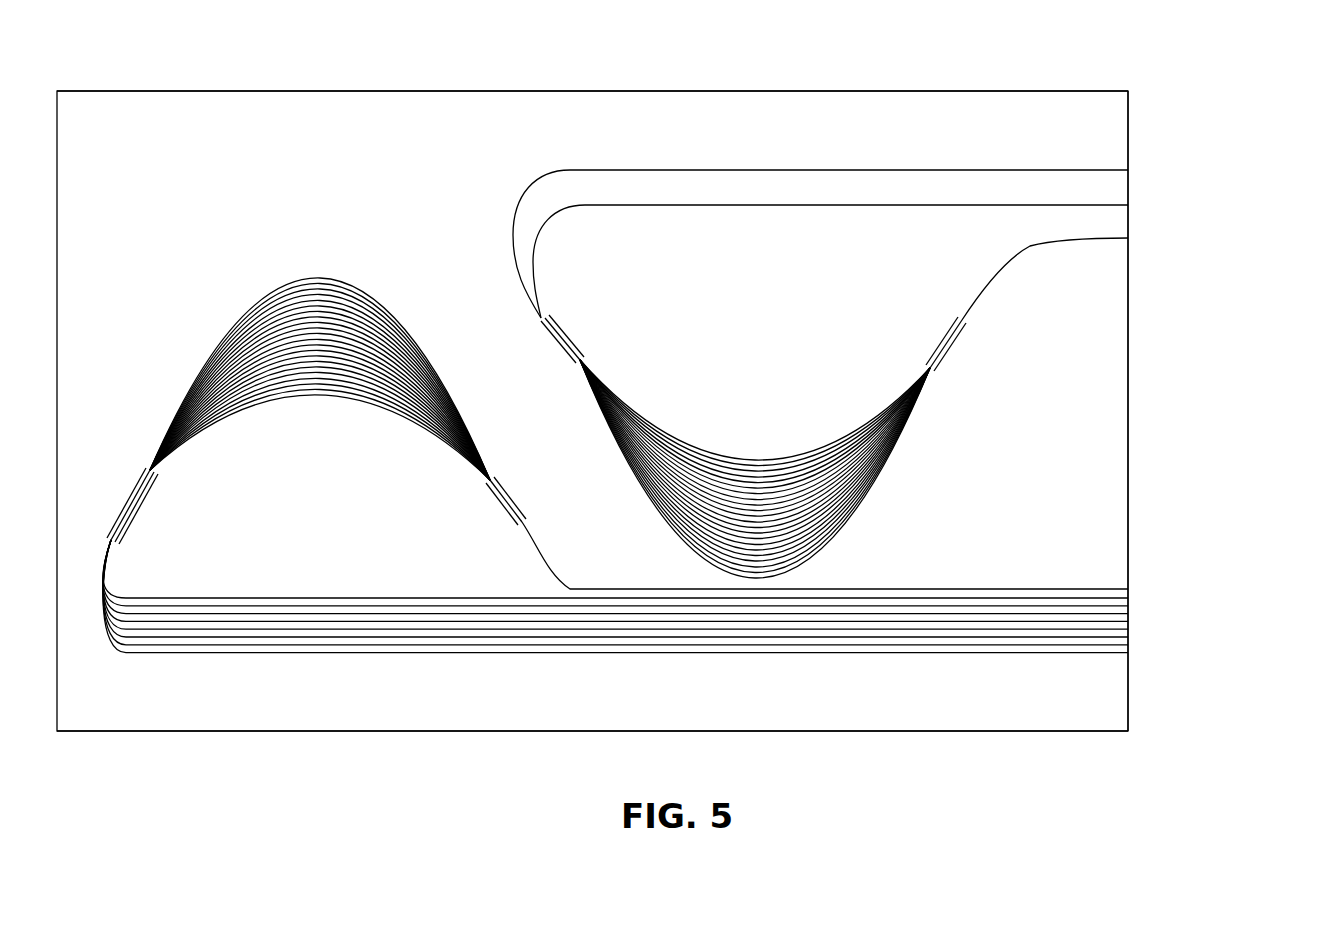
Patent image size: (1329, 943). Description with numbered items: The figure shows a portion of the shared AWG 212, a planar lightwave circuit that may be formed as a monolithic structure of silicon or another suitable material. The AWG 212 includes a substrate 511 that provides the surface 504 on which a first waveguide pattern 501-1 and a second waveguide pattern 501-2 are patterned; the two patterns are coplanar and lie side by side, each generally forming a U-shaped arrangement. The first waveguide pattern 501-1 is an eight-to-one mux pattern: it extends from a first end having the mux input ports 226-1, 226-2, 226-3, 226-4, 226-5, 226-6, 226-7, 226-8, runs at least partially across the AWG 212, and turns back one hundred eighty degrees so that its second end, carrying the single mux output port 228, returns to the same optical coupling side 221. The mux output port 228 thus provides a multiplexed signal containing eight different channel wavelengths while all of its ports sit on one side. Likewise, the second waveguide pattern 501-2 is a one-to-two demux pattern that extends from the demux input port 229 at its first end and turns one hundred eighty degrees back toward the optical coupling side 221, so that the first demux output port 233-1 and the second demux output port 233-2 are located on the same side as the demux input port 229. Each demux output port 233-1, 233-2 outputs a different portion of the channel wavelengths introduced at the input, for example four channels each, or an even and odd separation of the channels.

The surface 504 is at (310, 120).
The shared AWG 212 is at (530, 91).
The optical coupling side 221 is at (1128, 92).
The substrate 511 is at (187, 728).
The first waveguide pattern 501-1 is at (372, 276).
The second waveguide pattern 501-2 is at (713, 446).
The first demux output port 233-1 is at (1128, 170).
The second demux output port 233-2 is at (1128, 205).
The demux input port 229 is at (1128, 238).
The mux output port 228 is at (1128, 589).
The mux input port 226-1 is at (1138, 597).
The mux input port 226-2 is at (615, 573).
The mux input port 226-3 is at (615, 577).
The mux input port 226-4 is at (615, 580).
The mux input port 226-5 is at (615, 584).
The mux input port 226-6 is at (615, 588).
The mux input port 226-7 is at (615, 592).
The mux input port 226-8 is at (615, 596).